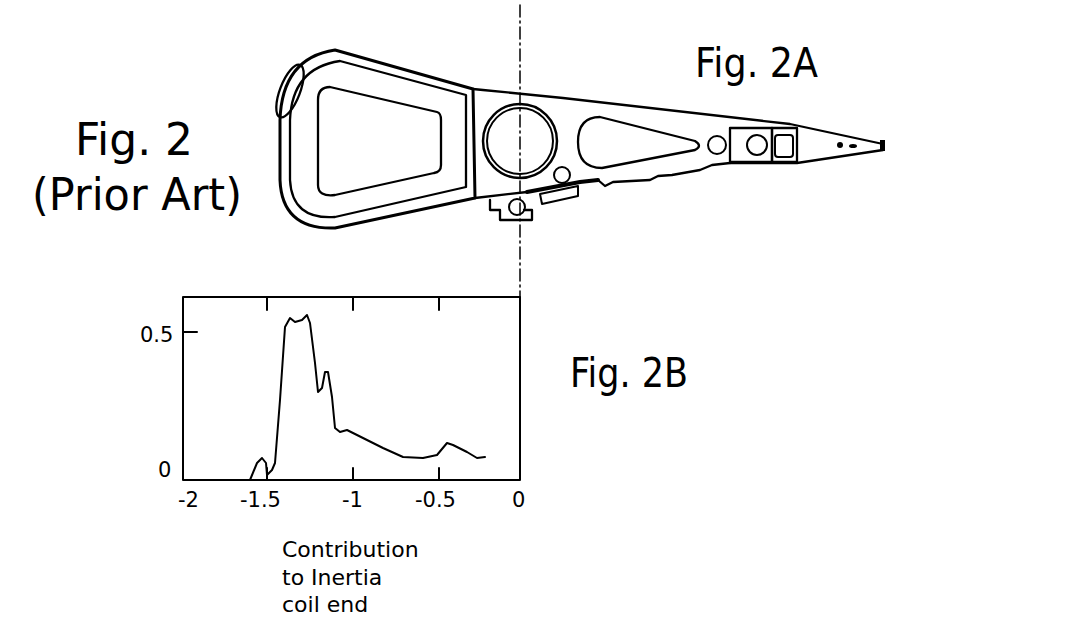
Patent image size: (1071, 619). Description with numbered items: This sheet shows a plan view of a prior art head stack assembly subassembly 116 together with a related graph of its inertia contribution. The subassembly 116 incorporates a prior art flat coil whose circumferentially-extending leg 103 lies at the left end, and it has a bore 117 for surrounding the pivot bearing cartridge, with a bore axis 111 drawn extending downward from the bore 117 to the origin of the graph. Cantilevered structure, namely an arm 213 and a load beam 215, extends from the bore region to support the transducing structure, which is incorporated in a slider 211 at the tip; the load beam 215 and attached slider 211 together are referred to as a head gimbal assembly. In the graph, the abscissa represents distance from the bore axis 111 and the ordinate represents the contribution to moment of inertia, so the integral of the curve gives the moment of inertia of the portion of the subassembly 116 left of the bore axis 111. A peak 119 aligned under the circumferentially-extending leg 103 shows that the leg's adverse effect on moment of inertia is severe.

In FIG. 2, the circumferentially-extending leg 103 is at (298, 138).
In FIG. 2A, the bore axis 111 is at (520, 67).
In FIG. 2A, the bore 117 is at (530, 137).
In FIG. 2A, the HSA subassembly 116 is at (700, 202).
In FIG. 2A, the arm 213 is at (627, 183).
In FIG. 2A, the load beam 215 is at (808, 157).
In FIG. 2A, the slider 211 is at (880, 145).
In FIG. 2B, the peak 119 is at (308, 310).